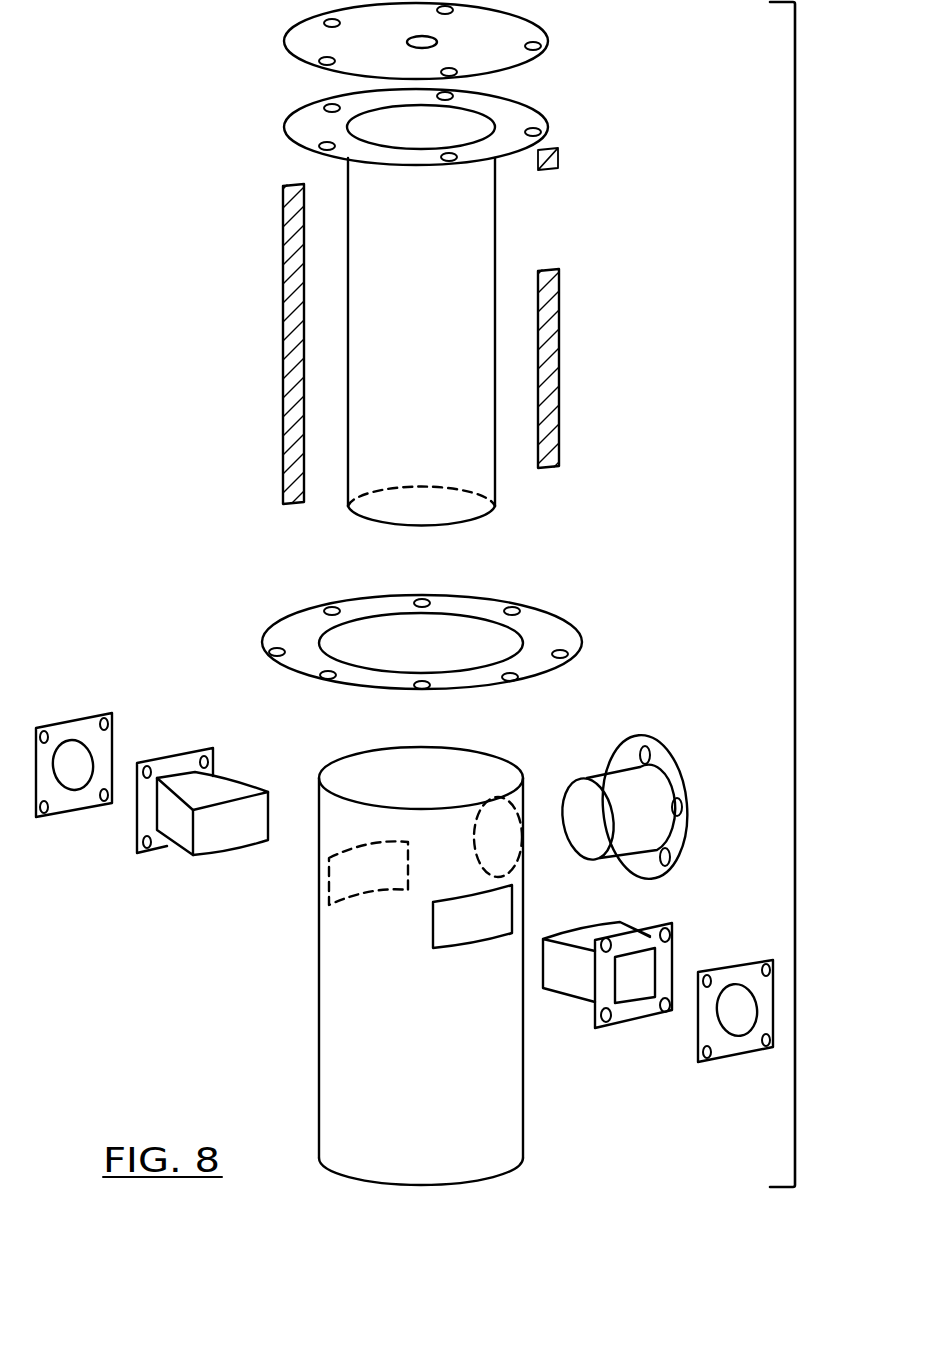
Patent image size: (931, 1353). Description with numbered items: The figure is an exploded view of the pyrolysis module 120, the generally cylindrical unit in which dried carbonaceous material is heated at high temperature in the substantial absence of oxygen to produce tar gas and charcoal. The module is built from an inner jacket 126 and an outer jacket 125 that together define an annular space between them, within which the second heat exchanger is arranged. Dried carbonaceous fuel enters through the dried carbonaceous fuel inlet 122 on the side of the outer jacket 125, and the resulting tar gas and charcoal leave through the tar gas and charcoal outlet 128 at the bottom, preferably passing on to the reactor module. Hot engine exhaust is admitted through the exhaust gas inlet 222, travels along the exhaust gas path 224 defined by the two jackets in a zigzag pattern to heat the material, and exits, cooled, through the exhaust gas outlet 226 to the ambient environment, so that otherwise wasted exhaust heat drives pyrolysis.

The pyrolysis module 120 is at (795, 593).
The dried carbonaceous fuel inlet 122 is at (685, 786).
The outer jacket 125 is at (319, 1093).
The inner jacket 126 is at (400, 436).
The tar gas and charcoal outlet 128 is at (406, 1190).
The exhaust gas inlet 222 is at (78, 718).
The exhaust gas path 224 is at (283, 320).
The exhaust gas outlet 226 is at (733, 1062).